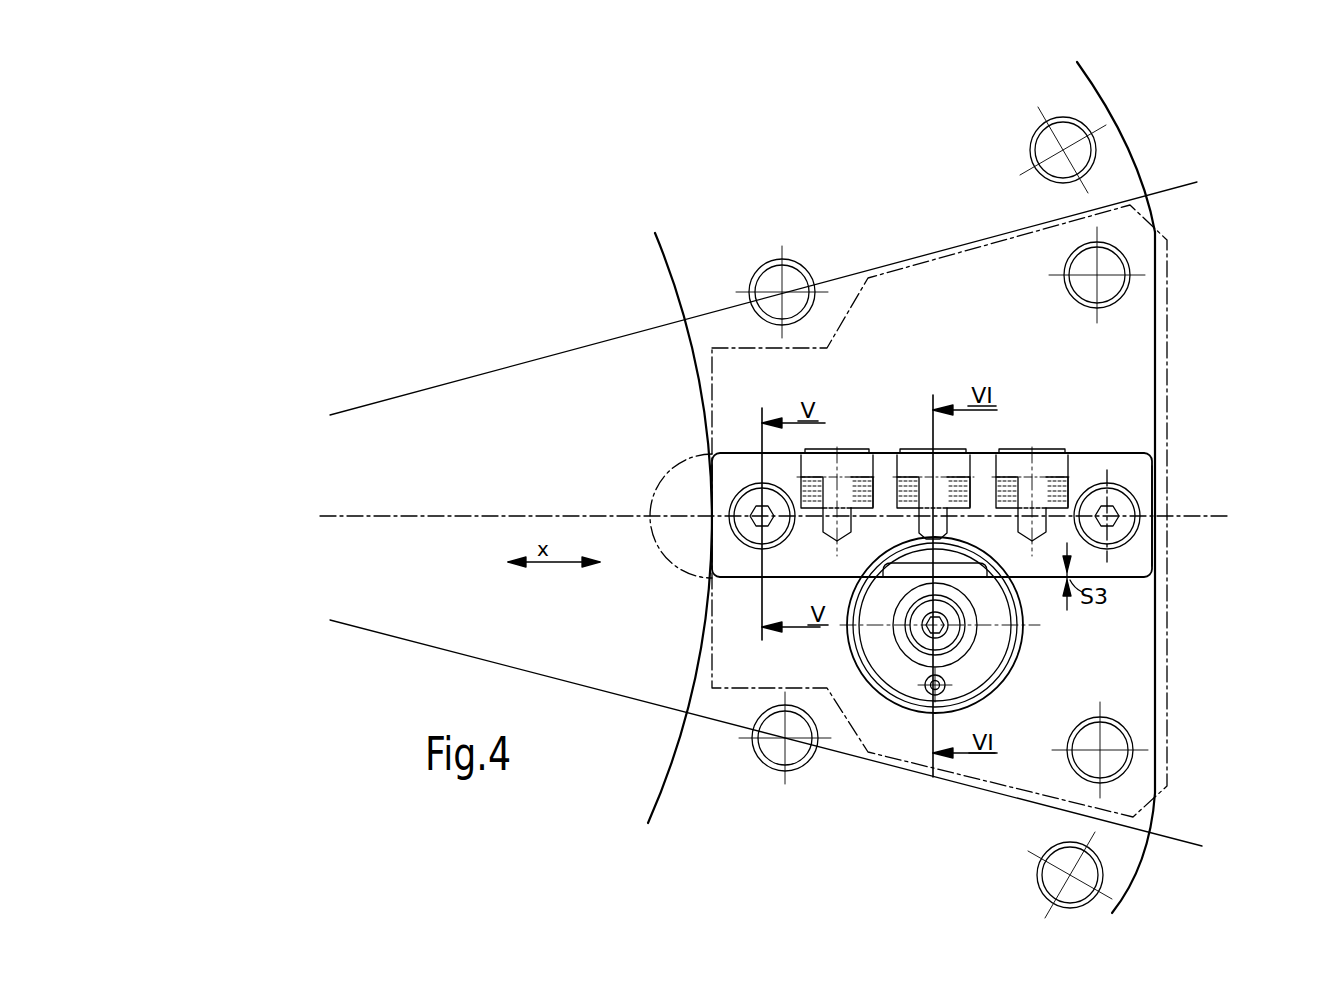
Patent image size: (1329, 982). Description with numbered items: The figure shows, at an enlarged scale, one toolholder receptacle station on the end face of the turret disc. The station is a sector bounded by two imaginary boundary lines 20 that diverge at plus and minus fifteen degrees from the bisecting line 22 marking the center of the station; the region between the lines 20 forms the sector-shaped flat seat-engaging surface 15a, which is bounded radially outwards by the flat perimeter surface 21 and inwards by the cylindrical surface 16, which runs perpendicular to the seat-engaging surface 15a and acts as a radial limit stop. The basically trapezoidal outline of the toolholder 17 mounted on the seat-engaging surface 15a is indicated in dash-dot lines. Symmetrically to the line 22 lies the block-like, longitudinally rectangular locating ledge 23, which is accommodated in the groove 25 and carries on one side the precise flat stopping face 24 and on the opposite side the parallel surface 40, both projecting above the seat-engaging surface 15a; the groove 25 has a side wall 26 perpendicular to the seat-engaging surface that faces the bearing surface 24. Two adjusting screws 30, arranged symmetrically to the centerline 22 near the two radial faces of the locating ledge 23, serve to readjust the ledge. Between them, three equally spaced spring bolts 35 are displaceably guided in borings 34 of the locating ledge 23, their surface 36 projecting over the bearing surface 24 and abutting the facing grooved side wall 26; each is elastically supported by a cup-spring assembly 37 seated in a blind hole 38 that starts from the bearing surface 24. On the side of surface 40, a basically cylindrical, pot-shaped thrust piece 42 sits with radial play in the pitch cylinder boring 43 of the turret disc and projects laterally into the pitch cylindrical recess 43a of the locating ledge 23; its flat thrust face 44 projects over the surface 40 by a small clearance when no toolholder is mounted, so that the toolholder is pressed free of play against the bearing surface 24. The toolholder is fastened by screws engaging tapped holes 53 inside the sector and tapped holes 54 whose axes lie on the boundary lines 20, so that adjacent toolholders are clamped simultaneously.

The seat-engaging surface 15a is at (1157, 212).
The cylindrical surface 16 is at (692, 336).
The toolholder 17 is at (1168, 590).
The boundary lines 20 is at (1180, 835).
The flat surface 21 is at (1162, 405).
The bisecting line 22 is at (1205, 500).
The locating ledge 23 is at (1148, 466).
The stopping face 24 is at (736, 452).
The groove 25 is at (693, 563).
The side wall 26 is at (1107, 451).
The adjusting screws 30 is at (763, 550).
The borings 34 is at (813, 523).
The spring bolts 35 is at (1037, 490).
The surface 36 is at (858, 452).
The cup-spring assembly 37 is at (800, 478).
The blind hole 38 is at (968, 482).
The surface 40 is at (778, 578).
The thrust piece 42 is at (1000, 656).
The pitch cylinder boring 43 is at (890, 702).
The pitch cylindrical recess 43a is at (958, 537).
The thrust face 44 is at (883, 585).
The tapped holes 53 is at (1035, 148).
The tapped holes 54 is at (793, 281).